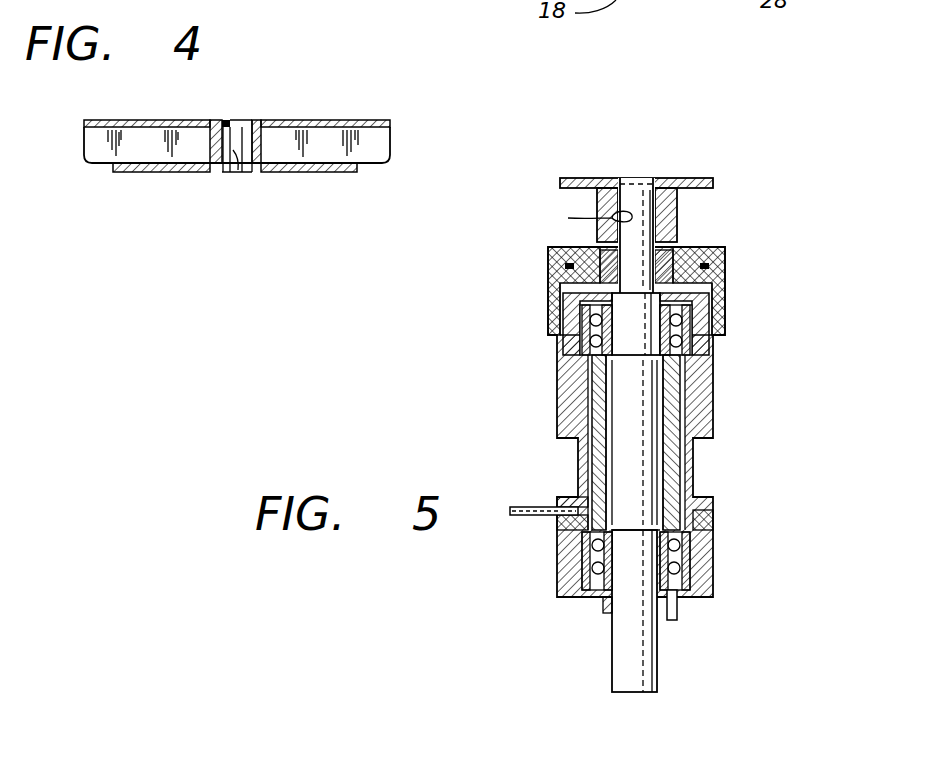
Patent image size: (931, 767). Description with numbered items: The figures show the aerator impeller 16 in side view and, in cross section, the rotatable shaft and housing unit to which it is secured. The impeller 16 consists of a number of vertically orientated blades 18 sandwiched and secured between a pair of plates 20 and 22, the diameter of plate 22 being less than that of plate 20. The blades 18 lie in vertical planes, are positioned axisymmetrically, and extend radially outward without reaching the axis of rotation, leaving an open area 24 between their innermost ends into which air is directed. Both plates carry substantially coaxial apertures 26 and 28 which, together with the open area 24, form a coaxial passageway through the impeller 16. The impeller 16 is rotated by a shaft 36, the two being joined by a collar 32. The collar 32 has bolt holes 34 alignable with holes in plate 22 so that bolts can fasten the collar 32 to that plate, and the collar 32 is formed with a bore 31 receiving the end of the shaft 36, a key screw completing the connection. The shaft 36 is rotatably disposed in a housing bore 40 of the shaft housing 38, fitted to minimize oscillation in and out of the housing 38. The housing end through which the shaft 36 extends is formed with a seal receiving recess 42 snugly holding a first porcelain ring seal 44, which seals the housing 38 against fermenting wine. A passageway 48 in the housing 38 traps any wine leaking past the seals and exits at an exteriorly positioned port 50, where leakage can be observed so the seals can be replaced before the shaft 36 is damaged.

In FIG. 4, the rotatable impeller 16 is at (342, 108).
In FIG. 4, the blades 18 is at (367, 148).
In FIG. 4, the plate 20 is at (142, 120).
In FIG. 4, the plate 22 is at (315, 177).
In FIG. 4, the open area 24 is at (250, 132).
In FIG. 4, the aperture 26 is at (226, 123).
In FIG. 4, the aperture 28 is at (226, 175).
In FIG. 5, the bore 31 is at (579, 216).
In FIG. 5, the collar 32 is at (660, 178).
In FIG. 5, the bolt holes 34 is at (580, 178).
In FIG. 5, the shaft 36 is at (617, 457).
In FIG. 5, the shaft housing 38 is at (713, 382).
In FIG. 5, the housing bore 40 is at (660, 468).
In FIG. 5, the seal receiving recess 42 is at (678, 243).
In FIG. 5, the first porcelain ring seal 44 is at (600, 252).
In FIG. 5, the passageway 48 is at (565, 337).
In FIG. 5, the port 50 is at (525, 515).